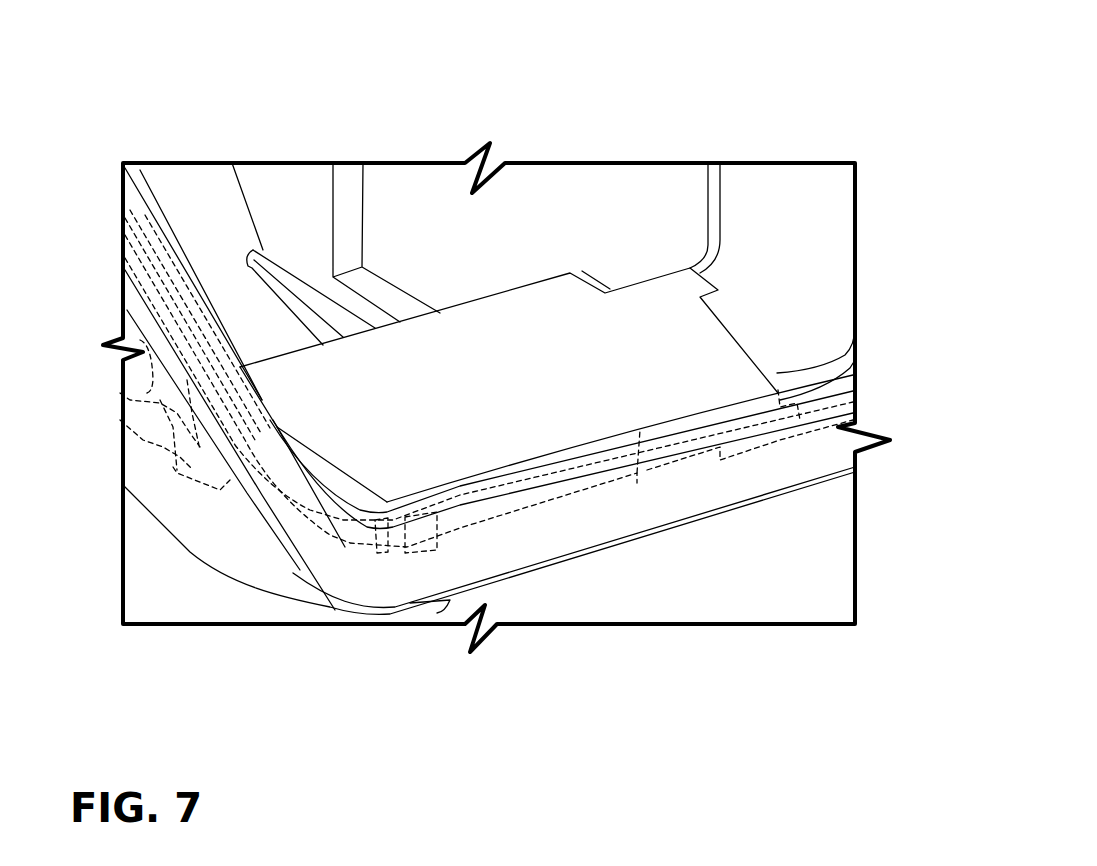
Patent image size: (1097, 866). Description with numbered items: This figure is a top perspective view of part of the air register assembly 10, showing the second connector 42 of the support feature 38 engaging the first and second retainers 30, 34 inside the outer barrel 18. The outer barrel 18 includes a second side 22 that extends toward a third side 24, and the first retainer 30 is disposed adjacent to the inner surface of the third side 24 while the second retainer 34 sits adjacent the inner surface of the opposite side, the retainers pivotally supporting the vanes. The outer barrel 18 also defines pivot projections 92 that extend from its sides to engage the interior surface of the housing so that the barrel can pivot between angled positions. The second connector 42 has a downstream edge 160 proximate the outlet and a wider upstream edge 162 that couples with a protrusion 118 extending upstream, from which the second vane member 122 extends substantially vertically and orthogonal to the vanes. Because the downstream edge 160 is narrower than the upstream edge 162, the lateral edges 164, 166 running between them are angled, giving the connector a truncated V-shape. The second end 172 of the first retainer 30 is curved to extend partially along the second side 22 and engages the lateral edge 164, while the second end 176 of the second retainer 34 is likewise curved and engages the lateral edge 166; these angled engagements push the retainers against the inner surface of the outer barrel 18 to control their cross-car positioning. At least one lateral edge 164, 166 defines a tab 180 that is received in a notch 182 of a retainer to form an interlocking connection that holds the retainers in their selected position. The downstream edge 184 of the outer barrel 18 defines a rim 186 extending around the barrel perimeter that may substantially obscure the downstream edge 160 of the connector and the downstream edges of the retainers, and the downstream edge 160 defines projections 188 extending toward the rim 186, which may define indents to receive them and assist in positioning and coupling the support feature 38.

The air register assembly 10 is at (755, 133).
The outer barrel 18 is at (220, 556).
The second side 22 is at (570, 530).
The third side 24 is at (193, 507).
The first retainer 30 is at (327, 473).
The second retainer 34 is at (825, 272).
The support feature 38 is at (290, 231).
The second connector 42 is at (460, 428).
The pivot projections 92 is at (452, 588).
The protrusion 118 is at (383, 284).
The second vane member 122 is at (260, 197).
The downstream edge 160 is at (428, 500).
The upstream edge 162 is at (267, 367).
The lateral edge 164 is at (350, 477).
The lateral edge 166 is at (743, 348).
The second end 172 is at (310, 462).
The second end 176 is at (688, 409).
The tab 180 is at (693, 280).
The notch 182 is at (718, 276).
The downstream edge 184 is at (820, 457).
The rim 186 is at (723, 413).
The projections 188 is at (637, 473).